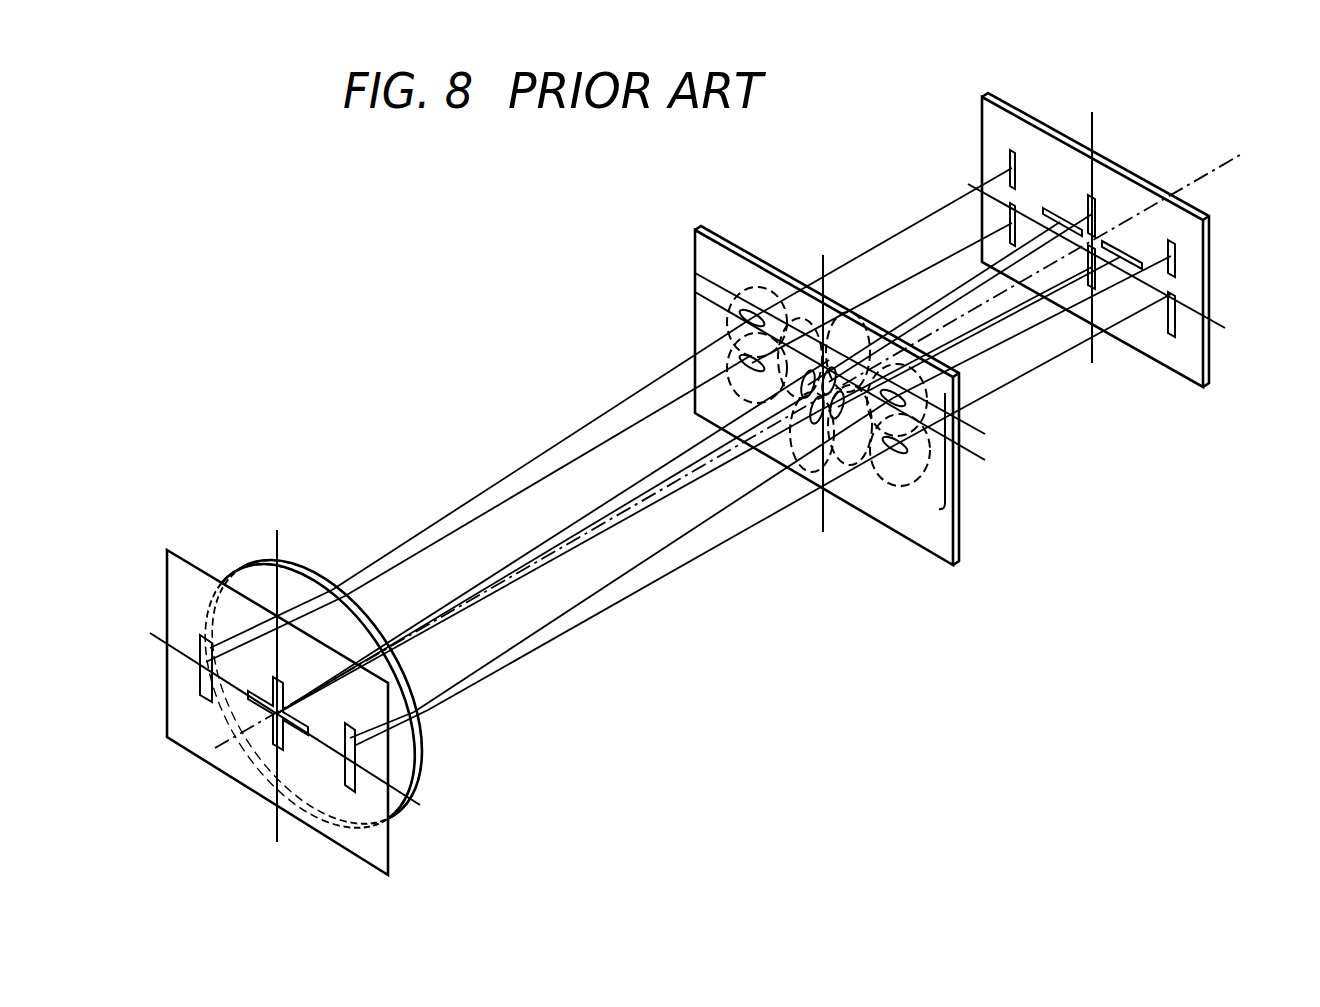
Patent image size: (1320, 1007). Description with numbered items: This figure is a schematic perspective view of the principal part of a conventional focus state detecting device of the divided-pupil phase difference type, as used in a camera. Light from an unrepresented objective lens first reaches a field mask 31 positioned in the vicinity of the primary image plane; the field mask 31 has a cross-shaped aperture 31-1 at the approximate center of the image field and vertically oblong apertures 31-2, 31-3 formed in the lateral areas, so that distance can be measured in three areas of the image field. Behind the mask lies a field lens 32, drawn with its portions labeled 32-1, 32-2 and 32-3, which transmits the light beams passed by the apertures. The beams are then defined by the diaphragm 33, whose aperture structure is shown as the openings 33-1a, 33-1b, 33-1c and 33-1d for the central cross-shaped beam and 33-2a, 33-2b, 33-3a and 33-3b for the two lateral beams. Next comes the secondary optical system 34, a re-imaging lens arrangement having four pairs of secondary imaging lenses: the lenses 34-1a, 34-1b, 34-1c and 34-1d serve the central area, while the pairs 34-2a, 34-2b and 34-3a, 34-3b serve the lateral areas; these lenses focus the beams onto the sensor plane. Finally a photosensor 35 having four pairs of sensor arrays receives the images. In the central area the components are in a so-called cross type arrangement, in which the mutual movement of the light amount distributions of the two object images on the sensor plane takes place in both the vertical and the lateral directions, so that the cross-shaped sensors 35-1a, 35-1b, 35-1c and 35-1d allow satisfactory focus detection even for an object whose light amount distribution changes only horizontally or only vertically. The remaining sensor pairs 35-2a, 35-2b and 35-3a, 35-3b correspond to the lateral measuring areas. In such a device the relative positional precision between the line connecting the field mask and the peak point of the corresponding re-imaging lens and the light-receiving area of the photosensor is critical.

The field mask 31 is at (390, 835).
The cross-shaped aperture 31-1 is at (273, 745).
The vertically oblong aperture 31-2 is at (350, 792).
The vertically oblong aperture 31-3 is at (205, 700).
The field lens 32 is at (356, 660).
The lens front surface 32-1 is at (345, 612).
The lens rim 32-2 is at (418, 760).
The lens rear surface 32-3 is at (232, 597).
The diaphragm 33 is at (702, 230).
The aperture 33-1a is at (832, 370).
The aperture 33-1b is at (815, 428).
The aperture 33-1c is at (840, 420).
The aperture 33-1d is at (805, 390).
The aperture 33-2a is at (900, 395).
The aperture 33-2b is at (898, 450).
The aperture 33-3a is at (748, 310).
The aperture 33-3b is at (748, 356).
The secondary optical system 34 is at (948, 460).
The lens element 34-1a is at (842, 312).
The lens element 34-1b is at (822, 472).
The lens element 34-1c is at (866, 465).
The lens element 34-1d is at (795, 318).
The lens element 34-2a is at (928, 395).
The lens element 34-2b is at (915, 486).
The lens element 34-3a is at (732, 300).
The lens element 34-3b is at (730, 358).
The photosensor 35 is at (987, 135).
The cross-shaped sensor 35-1a is at (1093, 196).
The cross-shaped sensor 35-1b is at (1133, 272).
The cross-shaped sensor 35-1c is at (1100, 272).
The cross-shaped sensor 35-1d is at (1057, 210).
The detector slit 35-2a is at (1177, 254).
The detector slit 35-2b is at (1177, 324).
The detector slit 35-3a is at (1013, 150).
The detector slit 35-3b is at (1010, 205).